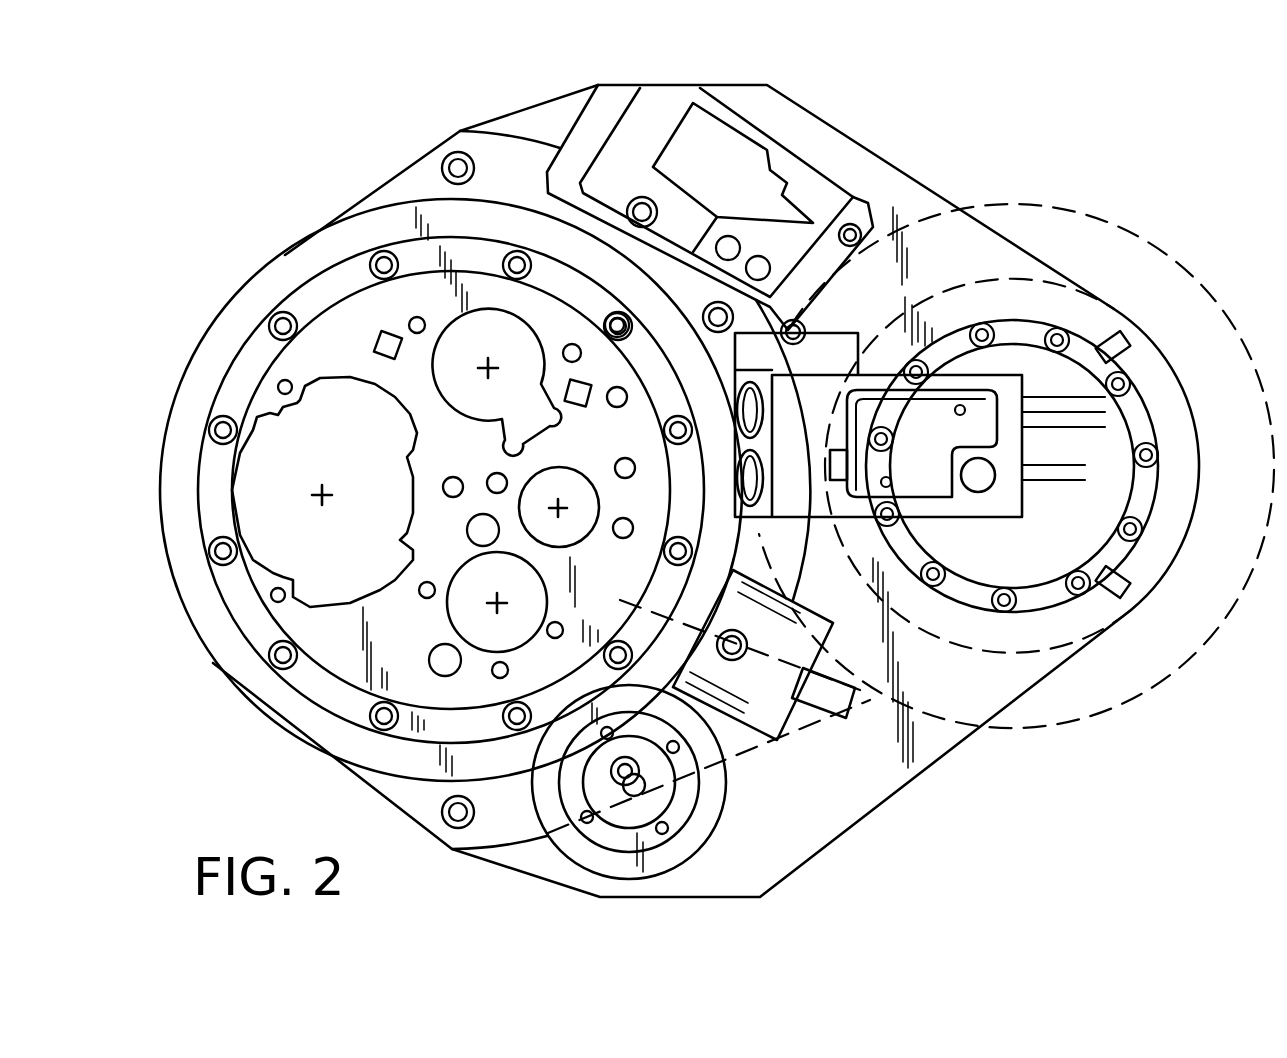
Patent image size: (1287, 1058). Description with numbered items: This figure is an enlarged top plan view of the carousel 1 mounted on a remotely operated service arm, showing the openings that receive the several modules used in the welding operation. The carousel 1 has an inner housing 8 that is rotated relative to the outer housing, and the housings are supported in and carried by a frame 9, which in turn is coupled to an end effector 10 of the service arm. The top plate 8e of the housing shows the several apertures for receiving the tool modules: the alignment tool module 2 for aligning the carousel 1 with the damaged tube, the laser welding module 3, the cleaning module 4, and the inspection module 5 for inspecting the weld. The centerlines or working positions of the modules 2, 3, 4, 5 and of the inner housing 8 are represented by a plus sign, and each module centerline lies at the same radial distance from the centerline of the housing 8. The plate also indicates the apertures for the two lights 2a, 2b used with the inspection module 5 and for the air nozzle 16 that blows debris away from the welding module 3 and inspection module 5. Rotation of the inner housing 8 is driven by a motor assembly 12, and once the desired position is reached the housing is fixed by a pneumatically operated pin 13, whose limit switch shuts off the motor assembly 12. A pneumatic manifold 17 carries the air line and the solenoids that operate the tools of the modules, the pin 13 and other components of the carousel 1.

The carousel 1 is at (226, 368).
The alignment tool module 2 is at (303, 460).
The light 2a is at (378, 347).
The light 2b is at (577, 405).
The laser welding module 3 is at (483, 584).
The cleaning module 4 is at (595, 509).
The inspection module 5 is at (473, 347).
The inner housing 8 is at (263, 630).
The top plate 8e is at (337, 327).
The frame 9 is at (905, 198).
The end effector 10 is at (1237, 250).
The motor assembly 12 is at (712, 790).
The pneumatically operated pin 13 is at (780, 740).
The air nozzle 16 is at (497, 474).
The pneumatic manifold 17 is at (650, 110).